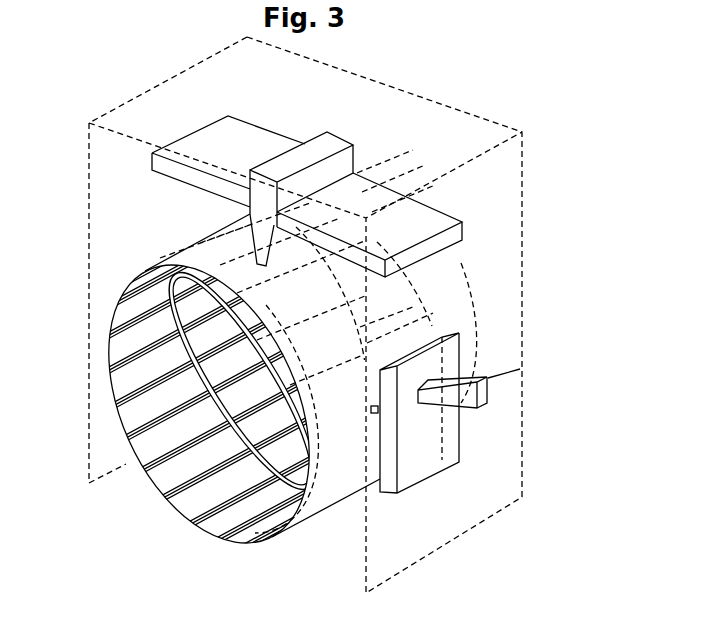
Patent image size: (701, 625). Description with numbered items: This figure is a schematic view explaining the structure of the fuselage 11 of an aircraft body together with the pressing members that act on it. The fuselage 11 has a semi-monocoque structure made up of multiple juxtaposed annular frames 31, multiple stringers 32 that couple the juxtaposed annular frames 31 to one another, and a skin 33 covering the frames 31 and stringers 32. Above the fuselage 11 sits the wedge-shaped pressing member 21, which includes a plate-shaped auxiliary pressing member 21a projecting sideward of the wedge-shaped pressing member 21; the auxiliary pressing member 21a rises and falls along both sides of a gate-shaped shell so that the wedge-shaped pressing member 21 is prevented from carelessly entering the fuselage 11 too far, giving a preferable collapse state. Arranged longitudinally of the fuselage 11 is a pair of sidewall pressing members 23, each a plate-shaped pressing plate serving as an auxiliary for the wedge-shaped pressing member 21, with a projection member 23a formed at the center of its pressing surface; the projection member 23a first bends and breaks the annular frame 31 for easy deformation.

The fuselage 11 is at (305, 388).
The wedge-shaped pressing member 21 is at (246, 171).
The auxiliary pressing member 21a is at (150, 158).
The sidewall pressing member 23 is at (466, 445).
The projection member 23a is at (377, 410).
The annular frame 31 is at (183, 379).
The stringer 32 is at (178, 445).
The skin 33 is at (428, 272).